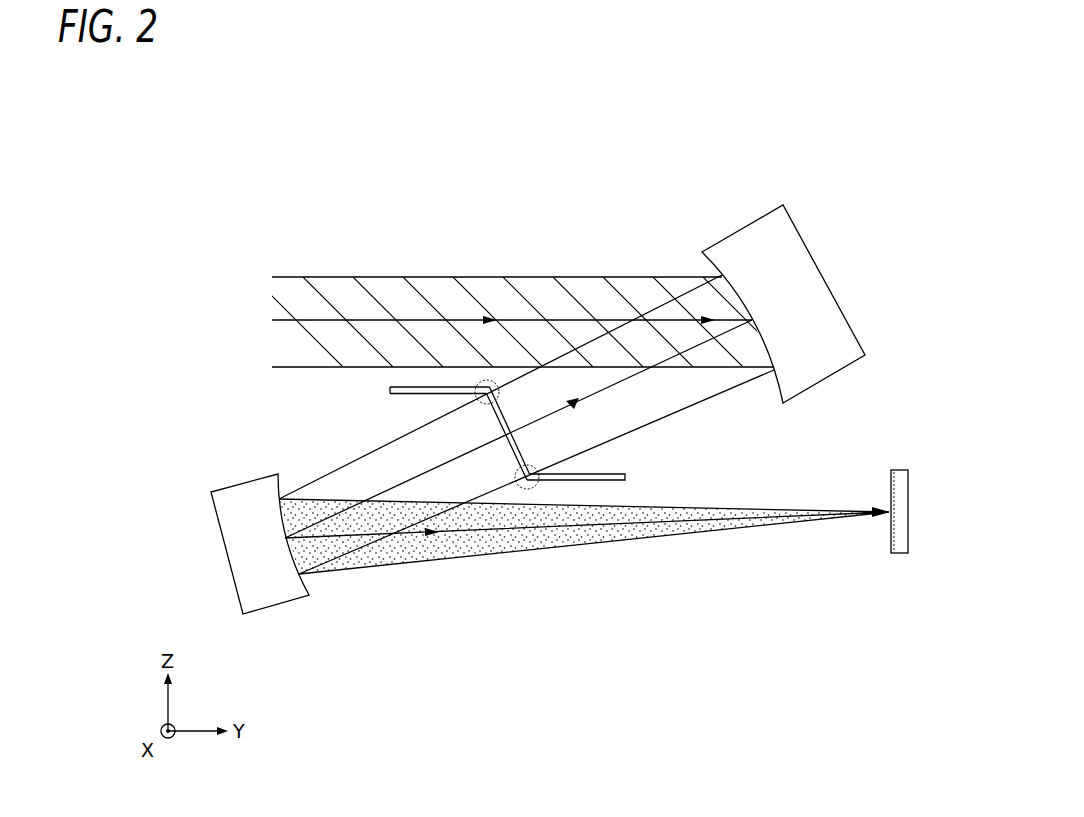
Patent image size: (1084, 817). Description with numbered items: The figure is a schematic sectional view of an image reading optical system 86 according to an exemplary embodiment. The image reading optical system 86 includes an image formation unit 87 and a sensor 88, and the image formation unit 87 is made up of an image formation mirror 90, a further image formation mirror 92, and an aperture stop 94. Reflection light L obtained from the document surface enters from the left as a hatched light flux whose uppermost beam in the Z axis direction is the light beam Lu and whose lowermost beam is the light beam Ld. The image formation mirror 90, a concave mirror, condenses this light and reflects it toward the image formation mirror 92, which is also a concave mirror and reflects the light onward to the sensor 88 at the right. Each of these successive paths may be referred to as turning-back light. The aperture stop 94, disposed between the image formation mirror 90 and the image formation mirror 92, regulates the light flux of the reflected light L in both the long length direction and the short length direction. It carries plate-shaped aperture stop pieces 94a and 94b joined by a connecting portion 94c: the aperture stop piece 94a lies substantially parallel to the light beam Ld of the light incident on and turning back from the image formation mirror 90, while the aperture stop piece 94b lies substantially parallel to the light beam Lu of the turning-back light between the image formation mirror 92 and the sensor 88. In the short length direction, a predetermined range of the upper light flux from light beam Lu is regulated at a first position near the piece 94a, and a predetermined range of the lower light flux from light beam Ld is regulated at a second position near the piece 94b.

The image reading optical system 86 is at (648, 170).
The image formation unit 87 is at (545, 247).
The sensor 88 is at (898, 555).
The image formation mirror 90 is at (818, 262).
The image formation mirror 92 is at (227, 555).
The aperture stop 94 is at (638, 477).
The aperture stop piece 94a is at (399, 394).
The aperture stop piece 94b is at (620, 474).
The connecting inclined portion 94c is at (502, 430).